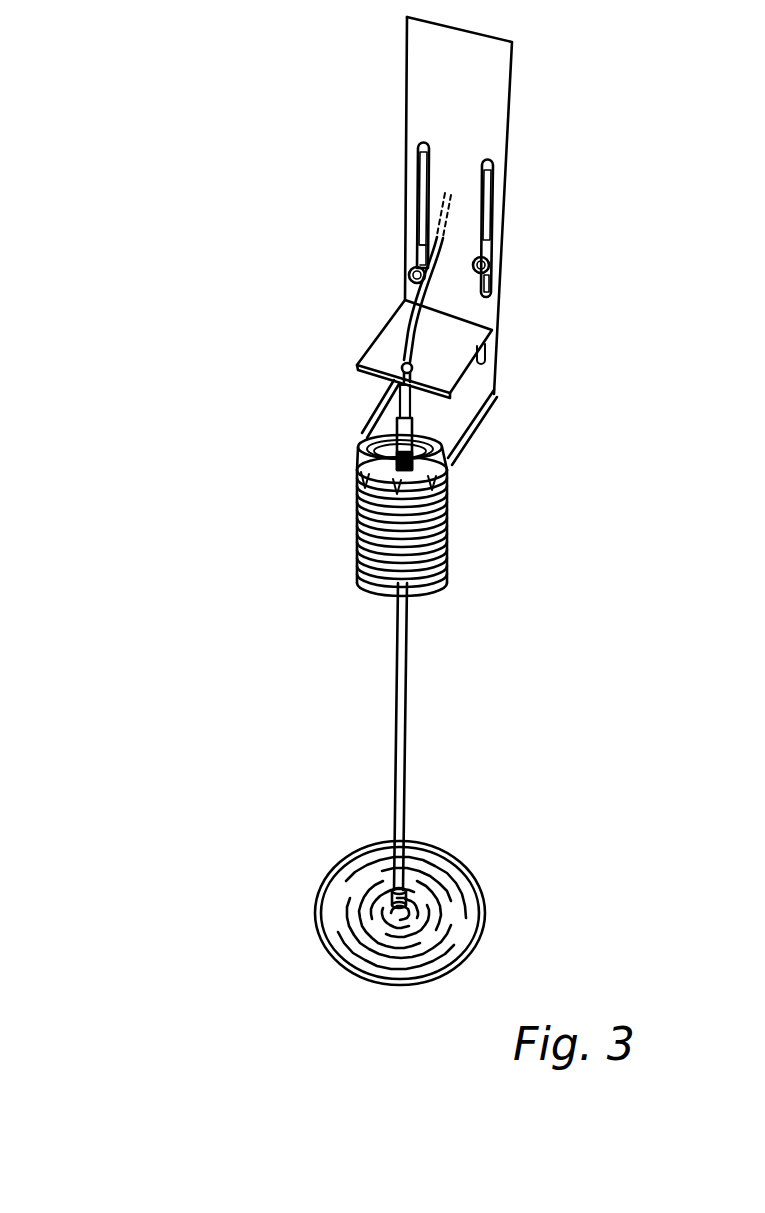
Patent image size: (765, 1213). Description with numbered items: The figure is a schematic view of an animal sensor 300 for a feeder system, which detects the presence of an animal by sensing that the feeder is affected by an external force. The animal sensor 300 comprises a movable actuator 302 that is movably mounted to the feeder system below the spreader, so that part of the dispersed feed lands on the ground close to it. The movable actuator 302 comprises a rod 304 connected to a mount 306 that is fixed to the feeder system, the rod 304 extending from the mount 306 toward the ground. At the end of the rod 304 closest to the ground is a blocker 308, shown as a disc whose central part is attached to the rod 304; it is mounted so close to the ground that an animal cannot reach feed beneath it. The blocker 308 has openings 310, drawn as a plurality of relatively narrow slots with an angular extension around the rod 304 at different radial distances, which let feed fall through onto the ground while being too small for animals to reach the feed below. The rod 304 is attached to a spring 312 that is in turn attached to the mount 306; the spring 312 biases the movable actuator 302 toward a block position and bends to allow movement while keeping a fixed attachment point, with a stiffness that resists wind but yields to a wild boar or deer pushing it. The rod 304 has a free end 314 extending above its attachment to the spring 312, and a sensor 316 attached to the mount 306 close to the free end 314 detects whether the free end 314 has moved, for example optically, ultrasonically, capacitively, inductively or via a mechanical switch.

The animal sensor 300 is at (192, 168).
The movable actuator 302 is at (464, 623).
The rod 304 is at (395, 718).
The mount 306 is at (495, 382).
The blocker 308 is at (476, 920).
The openings 310 is at (458, 940).
The spring 312 is at (450, 527).
The free end 314 is at (397, 386).
The sensor 316 is at (413, 354).